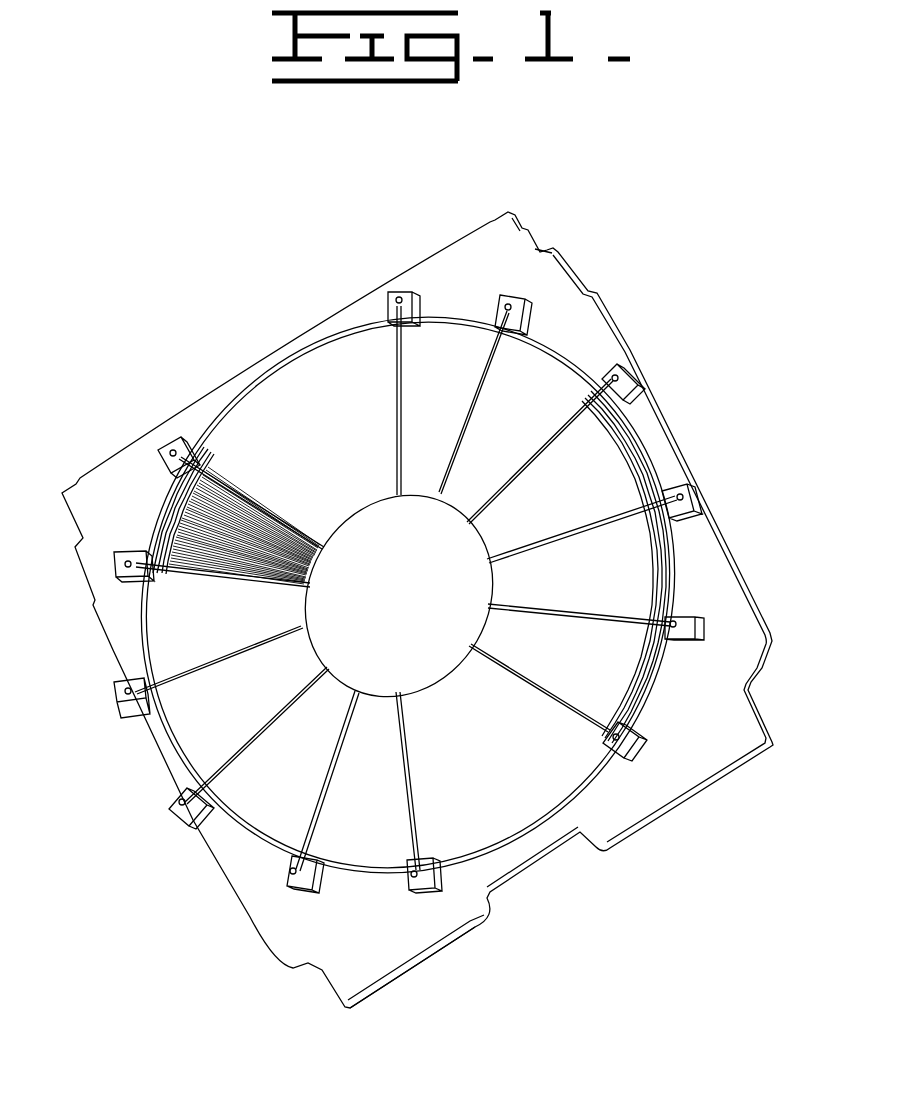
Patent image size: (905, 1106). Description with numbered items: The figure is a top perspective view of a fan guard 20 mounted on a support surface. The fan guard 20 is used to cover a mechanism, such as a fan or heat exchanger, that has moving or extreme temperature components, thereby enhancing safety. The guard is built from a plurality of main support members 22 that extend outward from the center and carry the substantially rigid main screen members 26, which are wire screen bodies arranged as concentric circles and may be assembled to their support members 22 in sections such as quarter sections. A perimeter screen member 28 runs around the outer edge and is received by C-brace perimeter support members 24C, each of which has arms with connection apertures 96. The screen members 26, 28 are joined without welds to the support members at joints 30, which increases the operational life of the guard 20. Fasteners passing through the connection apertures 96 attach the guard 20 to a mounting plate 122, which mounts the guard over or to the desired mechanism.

The fan guard 20 is at (676, 288).
The main support member 22 is at (395, 390).
The C-brace perimeter support member 24C is at (472, 938).
The main screen member 26 is at (182, 528).
The perimeter screen member 28 is at (670, 552).
The joint 30 is at (234, 592).
The connection aperture 96 is at (402, 290).
The mounting plate 122 is at (710, 753).